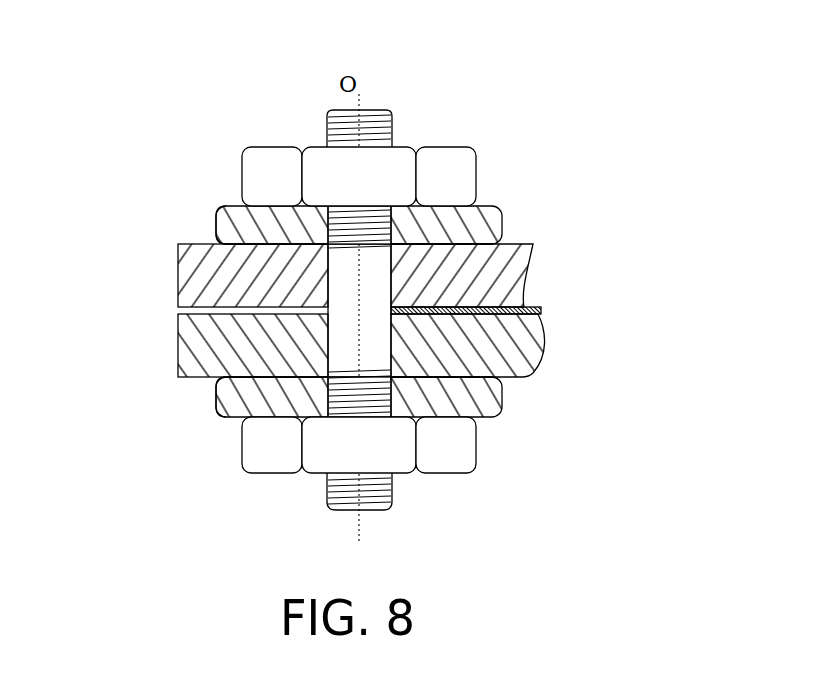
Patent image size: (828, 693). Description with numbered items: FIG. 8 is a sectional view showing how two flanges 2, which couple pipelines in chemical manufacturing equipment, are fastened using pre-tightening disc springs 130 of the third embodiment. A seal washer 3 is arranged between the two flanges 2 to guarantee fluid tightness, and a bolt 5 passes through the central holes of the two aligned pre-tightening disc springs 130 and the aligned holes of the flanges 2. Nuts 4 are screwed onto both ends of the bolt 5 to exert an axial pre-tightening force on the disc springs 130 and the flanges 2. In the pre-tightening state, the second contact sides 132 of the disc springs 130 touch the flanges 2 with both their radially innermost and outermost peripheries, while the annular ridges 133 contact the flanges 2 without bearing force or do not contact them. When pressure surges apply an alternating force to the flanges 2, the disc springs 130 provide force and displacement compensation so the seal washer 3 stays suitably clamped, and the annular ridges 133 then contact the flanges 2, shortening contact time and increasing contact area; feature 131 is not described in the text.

The flange 2 is at (513, 287).
The seal washer 3 is at (540, 314).
The nut 4 is at (391, 170).
The bolt 5 is at (363, 124).
The pre-tightening disc spring 130 is at (485, 224).
The washer outer edge 131 is at (245, 207).
The second contact side 132 is at (262, 244).
The annular ridge 133 is at (270, 245).